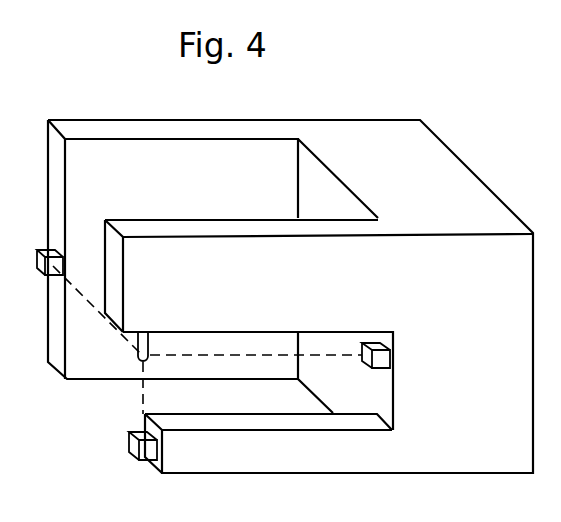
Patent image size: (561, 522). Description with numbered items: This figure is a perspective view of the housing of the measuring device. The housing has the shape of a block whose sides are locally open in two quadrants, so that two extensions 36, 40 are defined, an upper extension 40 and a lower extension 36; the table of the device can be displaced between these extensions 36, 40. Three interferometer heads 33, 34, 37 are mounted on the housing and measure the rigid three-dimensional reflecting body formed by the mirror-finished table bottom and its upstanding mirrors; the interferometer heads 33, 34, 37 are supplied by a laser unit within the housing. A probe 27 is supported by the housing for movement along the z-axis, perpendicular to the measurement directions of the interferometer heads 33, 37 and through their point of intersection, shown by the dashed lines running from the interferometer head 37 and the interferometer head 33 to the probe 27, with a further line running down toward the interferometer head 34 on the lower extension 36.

The extension 40 is at (143, 232).
The extension 36 is at (205, 468).
The interferometer head 37 is at (37, 262).
The interferometer head 33 is at (390, 362).
The interferometer head 34 is at (130, 456).
The probe 27 is at (139, 362).